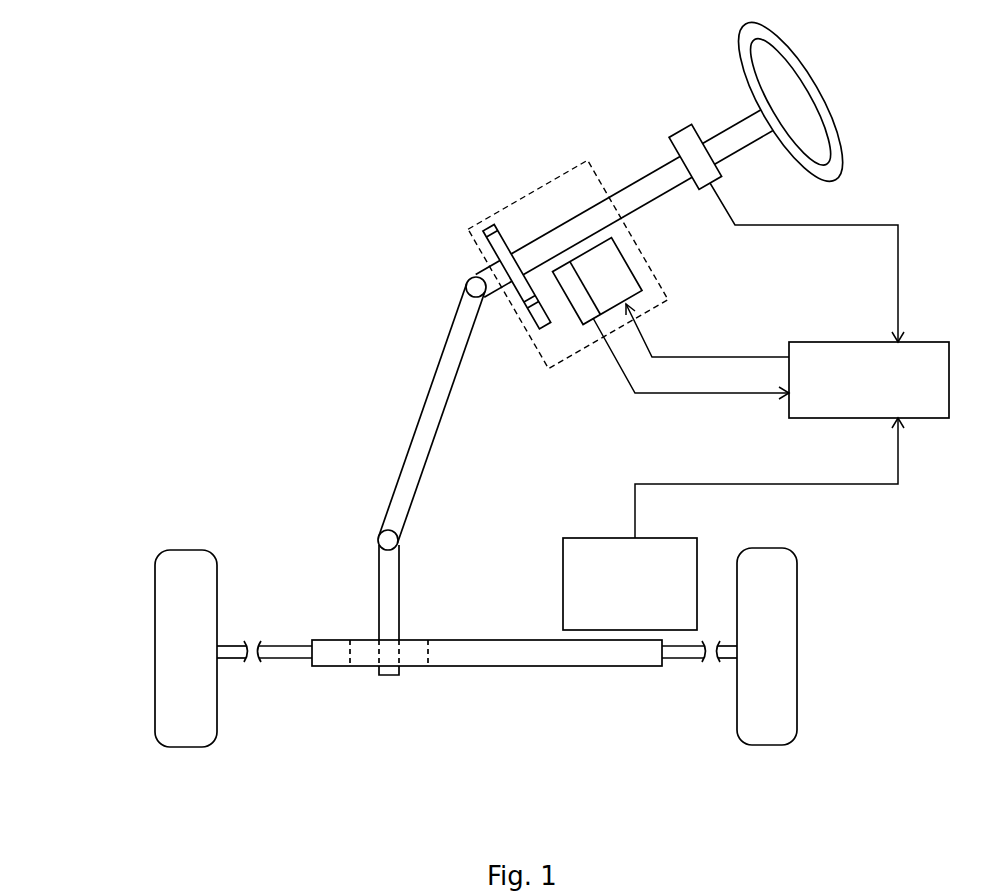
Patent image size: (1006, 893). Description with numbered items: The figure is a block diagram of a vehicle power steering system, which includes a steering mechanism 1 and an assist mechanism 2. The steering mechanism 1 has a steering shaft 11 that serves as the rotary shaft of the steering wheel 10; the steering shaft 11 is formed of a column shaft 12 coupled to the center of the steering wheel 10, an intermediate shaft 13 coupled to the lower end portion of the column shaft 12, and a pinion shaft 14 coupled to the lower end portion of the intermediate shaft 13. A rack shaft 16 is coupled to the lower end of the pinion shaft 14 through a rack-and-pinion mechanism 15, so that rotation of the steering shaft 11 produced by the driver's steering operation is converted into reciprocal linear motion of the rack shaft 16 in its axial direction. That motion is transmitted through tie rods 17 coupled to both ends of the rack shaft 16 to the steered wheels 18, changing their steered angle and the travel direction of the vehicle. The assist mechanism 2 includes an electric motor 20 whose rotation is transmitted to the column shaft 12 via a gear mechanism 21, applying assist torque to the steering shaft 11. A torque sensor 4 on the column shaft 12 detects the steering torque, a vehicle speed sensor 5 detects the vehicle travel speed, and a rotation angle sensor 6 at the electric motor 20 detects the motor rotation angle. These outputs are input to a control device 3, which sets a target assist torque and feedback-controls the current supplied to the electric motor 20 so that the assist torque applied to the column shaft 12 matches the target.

The steering mechanism 1 is at (348, 265).
The assist mechanism 2 is at (584, 267).
The control device 3 is at (949, 378).
The torque sensor 4 is at (672, 133).
The vehicle speed sensor 5 is at (585, 538).
The rotation angle sensor 6 is at (575, 322).
The steering wheel 10 is at (820, 95).
The steering shaft 11 is at (393, 411).
The column shaft 12 is at (466, 279).
The intermediate shaft 13 is at (427, 403).
The pinion shaft 14 is at (357, 526).
The rack-and-pinion mechanism 15 is at (428, 656).
The rack shaft 16 is at (573, 667).
The tie rods 17 is at (285, 662).
The steered wheels 18 is at (184, 748).
The electric motor 20 is at (630, 260).
The gear mechanism 21 is at (505, 290).